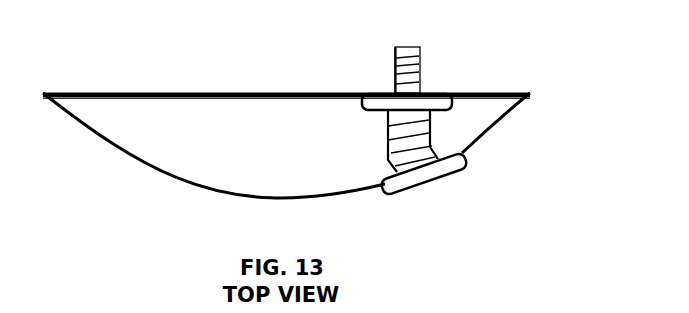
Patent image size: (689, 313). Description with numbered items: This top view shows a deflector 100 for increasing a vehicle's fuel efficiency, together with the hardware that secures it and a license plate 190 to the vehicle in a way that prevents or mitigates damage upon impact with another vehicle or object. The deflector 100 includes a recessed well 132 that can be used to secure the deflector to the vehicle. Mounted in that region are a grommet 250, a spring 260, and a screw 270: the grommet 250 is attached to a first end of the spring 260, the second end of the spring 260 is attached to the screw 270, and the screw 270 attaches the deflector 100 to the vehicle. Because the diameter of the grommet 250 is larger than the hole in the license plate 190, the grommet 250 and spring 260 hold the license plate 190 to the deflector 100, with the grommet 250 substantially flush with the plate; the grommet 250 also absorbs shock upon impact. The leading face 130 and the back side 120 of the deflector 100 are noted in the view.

The deflector 100 is at (275, 146).
The back side 120 is at (227, 92).
The leading face 130 is at (290, 203).
The recessed well 132 is at (380, 137).
The license plate 190 is at (148, 172).
The grommet 250 is at (412, 180).
The spring 260 is at (410, 142).
The screw 270 is at (418, 85).